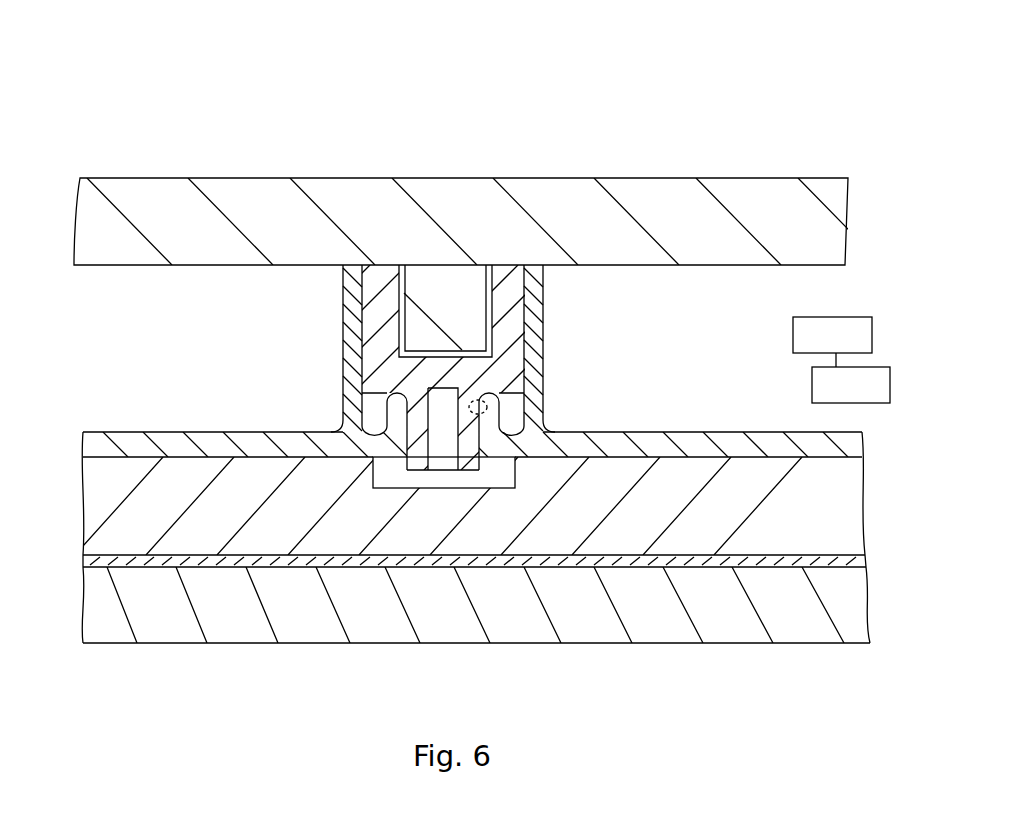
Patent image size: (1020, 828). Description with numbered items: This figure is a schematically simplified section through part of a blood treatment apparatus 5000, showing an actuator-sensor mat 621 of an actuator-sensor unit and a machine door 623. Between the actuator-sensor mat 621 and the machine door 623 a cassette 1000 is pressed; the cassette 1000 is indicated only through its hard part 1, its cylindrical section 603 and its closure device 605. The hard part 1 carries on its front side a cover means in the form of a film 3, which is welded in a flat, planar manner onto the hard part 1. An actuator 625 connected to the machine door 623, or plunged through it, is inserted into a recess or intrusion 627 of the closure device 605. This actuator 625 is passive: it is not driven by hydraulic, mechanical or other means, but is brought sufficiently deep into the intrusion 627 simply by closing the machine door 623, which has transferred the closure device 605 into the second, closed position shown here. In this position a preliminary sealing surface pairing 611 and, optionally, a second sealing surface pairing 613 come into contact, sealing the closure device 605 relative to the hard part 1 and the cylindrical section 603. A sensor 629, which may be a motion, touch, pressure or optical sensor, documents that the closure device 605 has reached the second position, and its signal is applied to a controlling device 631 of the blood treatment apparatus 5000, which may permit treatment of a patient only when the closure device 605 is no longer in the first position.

The hard part 1 is at (723, 437).
The film 3 is at (85, 564).
The cylindrical section 603 is at (563, 345).
The closure device 605 is at (375, 287).
The preliminary sealing surface pairing 611 is at (484, 405).
The second sealing surface pairing 613 is at (536, 270).
The actuator-sensor mat 621 is at (688, 632).
The machine door 623 is at (352, 197).
The actuator 625 is at (445, 292).
The intrusion 627 is at (388, 318).
The sensor 629 is at (832, 342).
The controlling device 631 is at (851, 385).
The cassette 1000 is at (259, 356).
The blood treatment apparatus 5000 is at (295, 752).